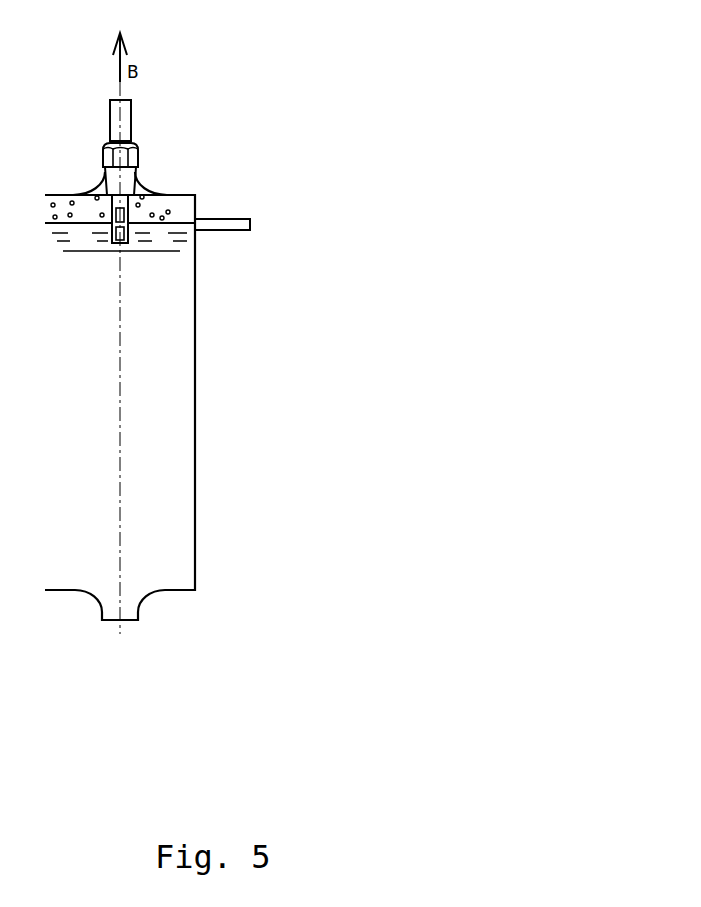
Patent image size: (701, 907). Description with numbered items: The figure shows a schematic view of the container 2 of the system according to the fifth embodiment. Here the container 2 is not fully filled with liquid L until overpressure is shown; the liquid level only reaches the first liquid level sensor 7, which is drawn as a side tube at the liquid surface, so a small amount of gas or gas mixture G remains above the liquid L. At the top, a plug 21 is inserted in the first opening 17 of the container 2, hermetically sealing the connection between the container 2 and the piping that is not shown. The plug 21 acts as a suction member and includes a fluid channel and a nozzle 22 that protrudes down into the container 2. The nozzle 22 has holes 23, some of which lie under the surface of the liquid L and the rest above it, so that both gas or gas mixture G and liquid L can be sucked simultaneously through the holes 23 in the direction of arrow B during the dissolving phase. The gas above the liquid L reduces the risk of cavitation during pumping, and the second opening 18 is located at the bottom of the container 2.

The container 2 is at (195, 410).
The first liquid level sensor 7 is at (250, 224).
The first opening 17 is at (130, 163).
The second opening 18 is at (130, 622).
The plug 21 is at (132, 138).
The nozzle 22 is at (125, 243).
The hole 23 is at (128, 213).